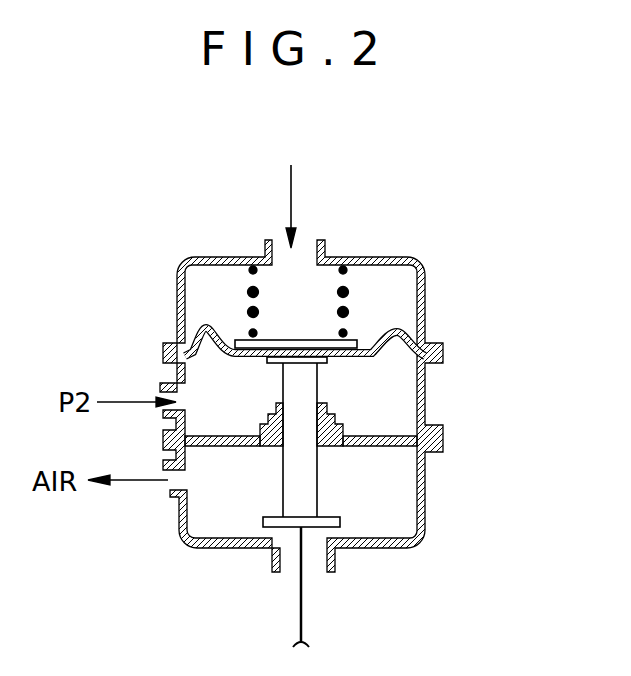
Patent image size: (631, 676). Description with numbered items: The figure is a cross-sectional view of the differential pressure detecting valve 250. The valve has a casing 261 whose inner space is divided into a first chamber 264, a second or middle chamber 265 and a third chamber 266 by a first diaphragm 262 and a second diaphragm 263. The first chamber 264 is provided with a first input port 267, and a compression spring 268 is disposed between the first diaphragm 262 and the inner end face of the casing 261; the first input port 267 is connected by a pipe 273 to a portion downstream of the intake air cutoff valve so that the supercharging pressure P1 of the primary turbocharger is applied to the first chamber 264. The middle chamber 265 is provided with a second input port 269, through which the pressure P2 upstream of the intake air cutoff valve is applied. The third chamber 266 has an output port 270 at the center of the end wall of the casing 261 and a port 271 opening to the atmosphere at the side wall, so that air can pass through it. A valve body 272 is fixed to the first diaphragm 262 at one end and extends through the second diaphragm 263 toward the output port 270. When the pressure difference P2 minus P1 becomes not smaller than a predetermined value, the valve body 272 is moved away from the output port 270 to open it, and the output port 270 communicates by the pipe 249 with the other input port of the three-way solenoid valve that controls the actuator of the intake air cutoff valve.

The pipe 249 is at (310, 617).
The differential pressure detecting valve 250 is at (467, 228).
The casing 261 is at (197, 256).
The first diaphragm 262 is at (378, 358).
The second diaphragm 263 is at (390, 445).
The first chamber 264 is at (393, 292).
The second chamber 265 is at (404, 406).
The third chamber 266 is at (400, 513).
The first input port 267 is at (303, 252).
The compression spring 268 is at (252, 312).
The second input port 269 is at (163, 388).
The output port 270 is at (293, 560).
The air vent port 271 is at (163, 485).
The valve body 272 is at (345, 525).
The pipe 273 is at (297, 191).